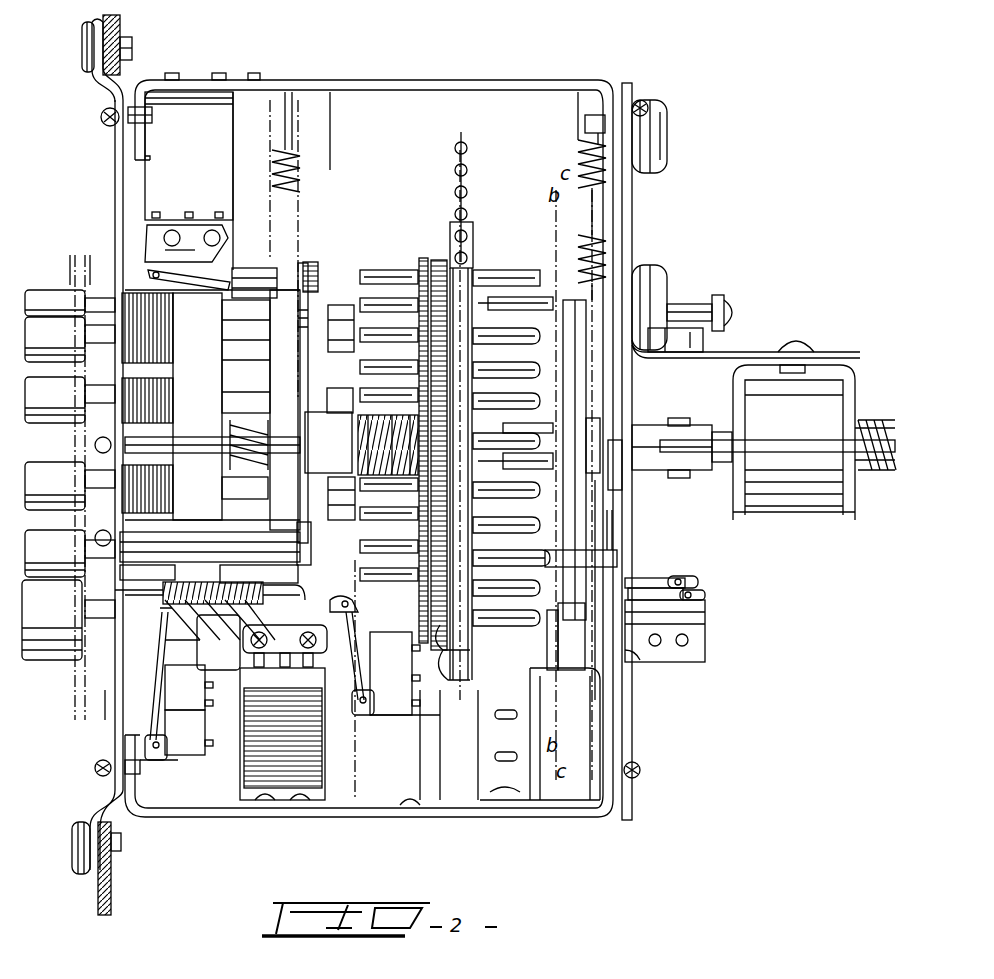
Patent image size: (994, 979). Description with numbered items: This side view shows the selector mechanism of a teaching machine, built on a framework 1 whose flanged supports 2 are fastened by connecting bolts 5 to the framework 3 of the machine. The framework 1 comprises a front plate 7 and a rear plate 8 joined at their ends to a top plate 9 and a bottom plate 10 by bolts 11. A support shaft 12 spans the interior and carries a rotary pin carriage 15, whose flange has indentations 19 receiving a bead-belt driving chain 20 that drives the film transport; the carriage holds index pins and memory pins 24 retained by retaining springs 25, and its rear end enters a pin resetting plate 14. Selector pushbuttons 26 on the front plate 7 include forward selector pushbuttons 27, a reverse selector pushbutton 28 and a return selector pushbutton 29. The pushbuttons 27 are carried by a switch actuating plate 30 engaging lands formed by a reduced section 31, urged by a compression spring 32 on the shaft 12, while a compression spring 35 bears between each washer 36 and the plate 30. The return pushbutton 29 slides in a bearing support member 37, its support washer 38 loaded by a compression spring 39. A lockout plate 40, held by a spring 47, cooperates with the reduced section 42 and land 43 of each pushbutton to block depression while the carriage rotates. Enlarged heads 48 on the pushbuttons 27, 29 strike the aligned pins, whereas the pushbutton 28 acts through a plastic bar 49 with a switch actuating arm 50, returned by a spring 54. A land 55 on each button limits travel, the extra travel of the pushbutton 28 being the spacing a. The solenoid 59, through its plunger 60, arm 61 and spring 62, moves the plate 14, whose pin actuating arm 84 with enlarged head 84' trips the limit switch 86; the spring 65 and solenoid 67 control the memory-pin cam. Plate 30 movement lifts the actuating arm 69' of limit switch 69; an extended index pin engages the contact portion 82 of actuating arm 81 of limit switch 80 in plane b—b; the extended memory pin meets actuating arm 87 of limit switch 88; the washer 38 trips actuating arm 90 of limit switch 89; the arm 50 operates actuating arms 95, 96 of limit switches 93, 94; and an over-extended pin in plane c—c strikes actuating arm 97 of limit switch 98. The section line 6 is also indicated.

The framework 1 is at (110, 183).
The flanged supports 2 is at (100, 88).
The framework of the teaching machine 3 is at (120, 22).
The connecting bolts 5 is at (84, 48).
The section line 6 is at (300, 215).
The front plate 7 is at (108, 720).
The rear plate 8 is at (575, 215).
The top plate 9 is at (412, 86).
The bottom plate 10 is at (342, 808).
The bolts 11 is at (102, 124).
The support shaft 12 is at (382, 426).
The pin resetting plate 14 is at (577, 410).
The rotary pin carriage 15 is at (495, 245).
The indentations 19 is at (447, 240).
The bead-belt driving chain 20 is at (468, 154).
The memory pins 24 is at (520, 298).
The retaining springs 25 is at (422, 262).
The selector pushbuttons 26 is at (42, 283).
The forward selector pushbuttons 27 is at (55, 399).
The reverse selector pushbutton 28 is at (55, 553).
The return selector pushbutton 29 is at (52, 620).
The switch actuating plate 30 is at (212, 405).
The section of reduced diameter 31 is at (245, 403).
The compression spring 32 is at (240, 470).
The compression spring 35 is at (150, 305).
The washer 36 is at (125, 338).
The bearing support member 37 is at (218, 642).
The support washer 38 is at (130, 688).
The compression spring 39 is at (170, 640).
The lockout plate 40 is at (296, 350).
The section of reduced diameter 42 is at (320, 282).
The land 43 is at (252, 270).
The spring 47 is at (298, 165).
The enlarged heads 48 is at (345, 310).
The plastic bar 49 is at (328, 442).
The switch actuating arm 50 is at (285, 646).
The spring 54 is at (395, 480).
The land 55 is at (85, 262).
The solenoid 59 is at (800, 488).
The plunger 60 is at (888, 470).
The arm 61 is at (790, 450).
The spring 62 is at (882, 420).
The spring 65 is at (585, 150).
The solenoid 67 is at (585, 795).
The limit switch 69 is at (189, 177).
The actuating arm 69' is at (206, 254).
The limit switch 80 is at (688, 578).
The actuating arm 81 is at (655, 578).
The contact portion 82 is at (548, 577).
The pin actuating arm 84 is at (672, 225).
The enlarged head 84' is at (738, 296).
The limit switch 86 is at (660, 358).
The actuating arm 87 is at (542, 600).
The limit switch 88 is at (574, 628).
The limit switch 89 is at (189, 732).
The actuating arm 90 is at (189, 687).
The limit switch 93 is at (282, 734).
The limit switch 94 is at (405, 718).
The actuating arm 95 is at (362, 588).
The actuating arm 96 is at (360, 612).
The actuating arm 97 is at (548, 592).
The limit switch 98 is at (702, 652).